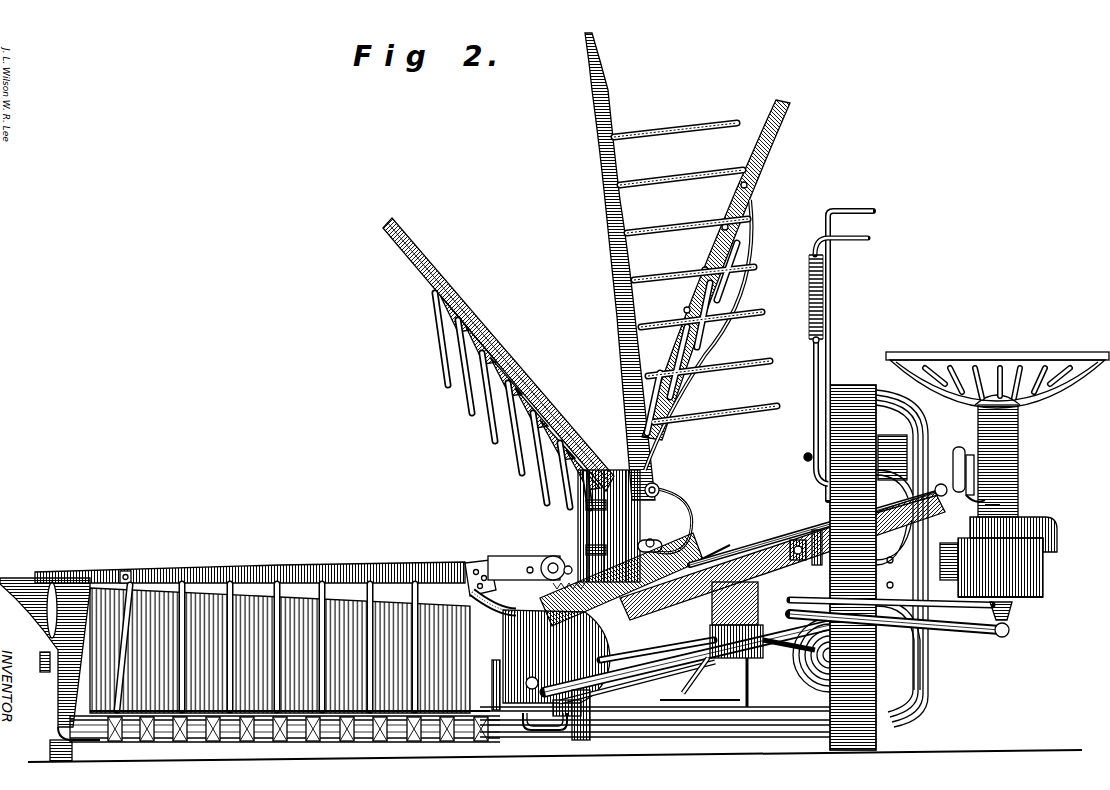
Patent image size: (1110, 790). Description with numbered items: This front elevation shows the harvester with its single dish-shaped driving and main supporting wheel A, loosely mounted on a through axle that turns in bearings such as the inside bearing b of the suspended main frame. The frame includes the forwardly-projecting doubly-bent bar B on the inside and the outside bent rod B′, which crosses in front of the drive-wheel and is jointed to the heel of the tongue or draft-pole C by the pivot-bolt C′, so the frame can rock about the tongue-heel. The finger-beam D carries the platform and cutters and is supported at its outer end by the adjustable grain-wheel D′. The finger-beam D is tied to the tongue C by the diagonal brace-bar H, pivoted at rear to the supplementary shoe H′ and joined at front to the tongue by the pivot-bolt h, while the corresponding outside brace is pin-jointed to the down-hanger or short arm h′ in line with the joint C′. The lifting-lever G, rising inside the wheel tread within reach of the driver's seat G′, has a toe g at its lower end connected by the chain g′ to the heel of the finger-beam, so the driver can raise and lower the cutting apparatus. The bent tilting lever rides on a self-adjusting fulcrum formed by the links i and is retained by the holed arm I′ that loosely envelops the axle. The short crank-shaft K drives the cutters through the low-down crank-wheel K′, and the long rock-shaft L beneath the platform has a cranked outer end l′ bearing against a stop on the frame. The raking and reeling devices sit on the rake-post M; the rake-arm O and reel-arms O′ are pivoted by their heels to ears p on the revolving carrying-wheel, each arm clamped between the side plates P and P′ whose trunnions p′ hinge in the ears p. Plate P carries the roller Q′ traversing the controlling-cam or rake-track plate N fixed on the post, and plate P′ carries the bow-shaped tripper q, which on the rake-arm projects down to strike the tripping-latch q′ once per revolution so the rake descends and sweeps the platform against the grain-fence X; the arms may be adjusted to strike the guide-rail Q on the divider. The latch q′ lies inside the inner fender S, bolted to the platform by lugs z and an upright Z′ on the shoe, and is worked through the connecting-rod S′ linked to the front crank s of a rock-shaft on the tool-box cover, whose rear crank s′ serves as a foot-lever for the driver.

The reel arm O′ is at (589, 307).
The rake arm O is at (250, 561).
The tripper-piece q is at (671, 520).
The side clamping-plate P′ is at (650, 534).
The guide-rail Q is at (50, 659).
The lugs or base-flanges z is at (122, 570).
The grain-fence X is at (280, 648).
The rock-shaft L is at (198, 742).
The finger-beam D is at (265, 741).
The grain-wheel D′ is at (68, 761).
The side clamping-plate P is at (505, 562).
The trunnions p′ is at (543, 554).
The lugs or ears p is at (567, 556).
The tripping-latch q′ is at (505, 614).
The roller Q′ is at (720, 538).
The controlling-cam or rake-track plate N is at (723, 547).
The pivot-bolt h is at (752, 563).
The chain g′ is at (862, 568).
The toe g is at (798, 542).
The inner fence or fender S is at (556, 656).
The bearing b is at (535, 686).
The upright Z′ is at (500, 690).
The rake-post M is at (660, 668).
The diagonal brace-bar H is at (678, 636).
The crank-wheel K′ is at (634, 685).
The tongue or draft-pole C is at (735, 603).
The doubly-bent bar B is at (770, 652).
The pivot-bolt C′ is at (712, 670).
The crank-arm l′ is at (752, 696).
The supplementary shoe H′ is at (590, 740).
The crank-shaft K is at (830, 655).
The driving and main supporting wheel A is at (853, 567).
The connecting rod or link S′ is at (885, 558).
The links i is at (888, 577).
The lifting-lever G is at (844, 355).
The driver's seat G′ is at (997, 426).
The retaining-arm I′ is at (977, 491).
The front crank s is at (941, 484).
The rear crank s′ is at (1005, 505).
The outside bent rod B′ is at (935, 625).
The down-hanger or short arm h′ is at (1014, 608).